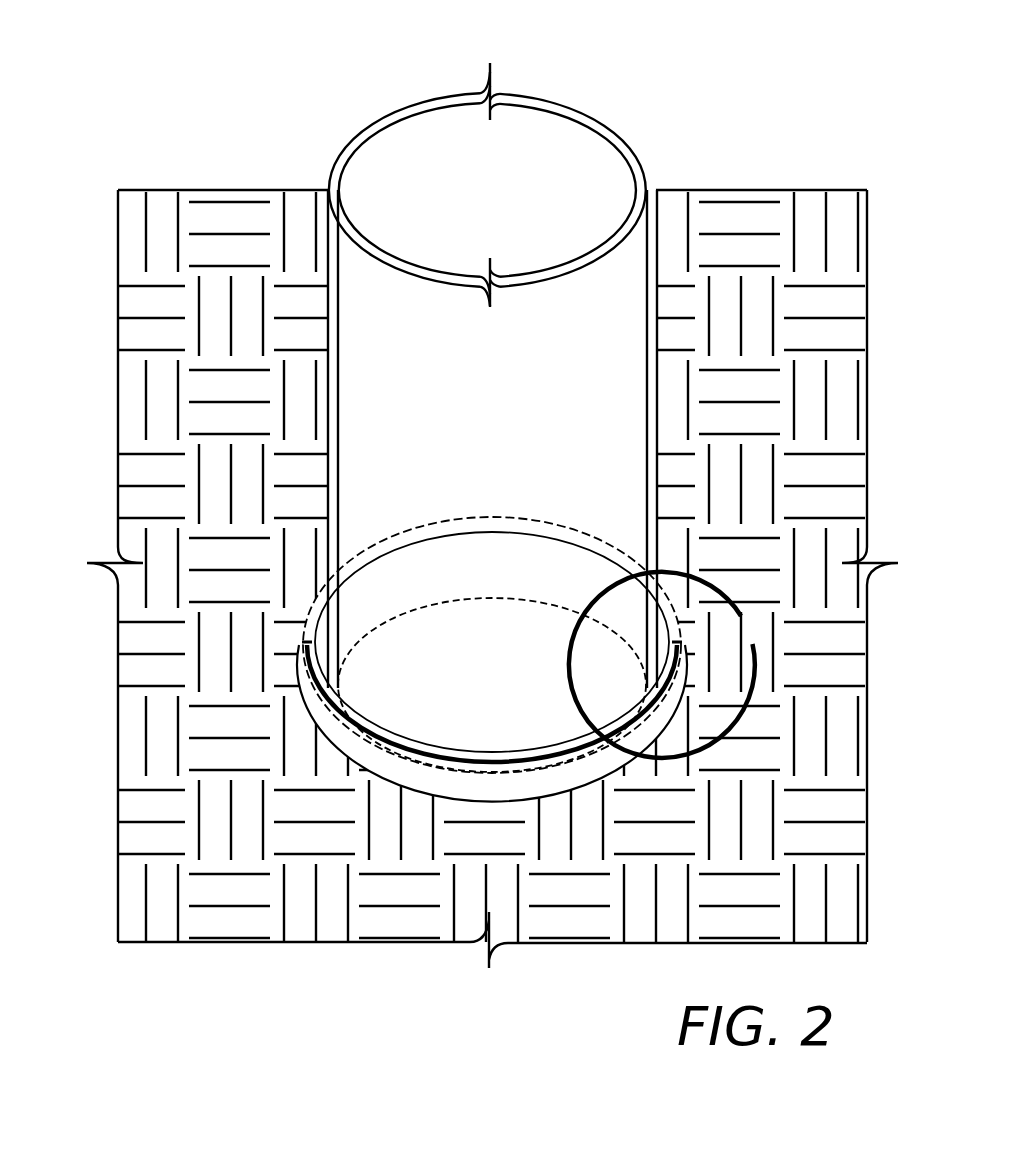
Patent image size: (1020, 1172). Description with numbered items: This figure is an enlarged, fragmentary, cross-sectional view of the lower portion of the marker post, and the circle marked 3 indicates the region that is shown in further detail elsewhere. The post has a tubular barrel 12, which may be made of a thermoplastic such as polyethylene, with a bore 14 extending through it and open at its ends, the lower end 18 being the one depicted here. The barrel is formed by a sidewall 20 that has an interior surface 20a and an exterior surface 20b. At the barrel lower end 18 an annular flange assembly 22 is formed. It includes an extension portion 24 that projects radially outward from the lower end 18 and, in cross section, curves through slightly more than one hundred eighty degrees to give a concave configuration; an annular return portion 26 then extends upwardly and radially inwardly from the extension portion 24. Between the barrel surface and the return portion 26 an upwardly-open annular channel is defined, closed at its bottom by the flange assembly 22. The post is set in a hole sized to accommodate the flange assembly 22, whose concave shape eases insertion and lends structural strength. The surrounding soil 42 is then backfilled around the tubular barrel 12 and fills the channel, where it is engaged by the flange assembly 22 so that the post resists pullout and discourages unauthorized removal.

The detail view circle for FIG. 3 is at (750, 644).
The tubular barrel 12 is at (388, 111).
The bore 14 is at (512, 185).
The lower end 18 is at (444, 603).
The sidewall 20 is at (618, 122).
The interior surface 20a is at (530, 226).
The exterior surface 20b is at (530, 418).
The annular flange assembly 22 is at (307, 740).
The extension portion 24 is at (297, 703).
The return portion 26 is at (307, 642).
The soil 42 is at (806, 190).